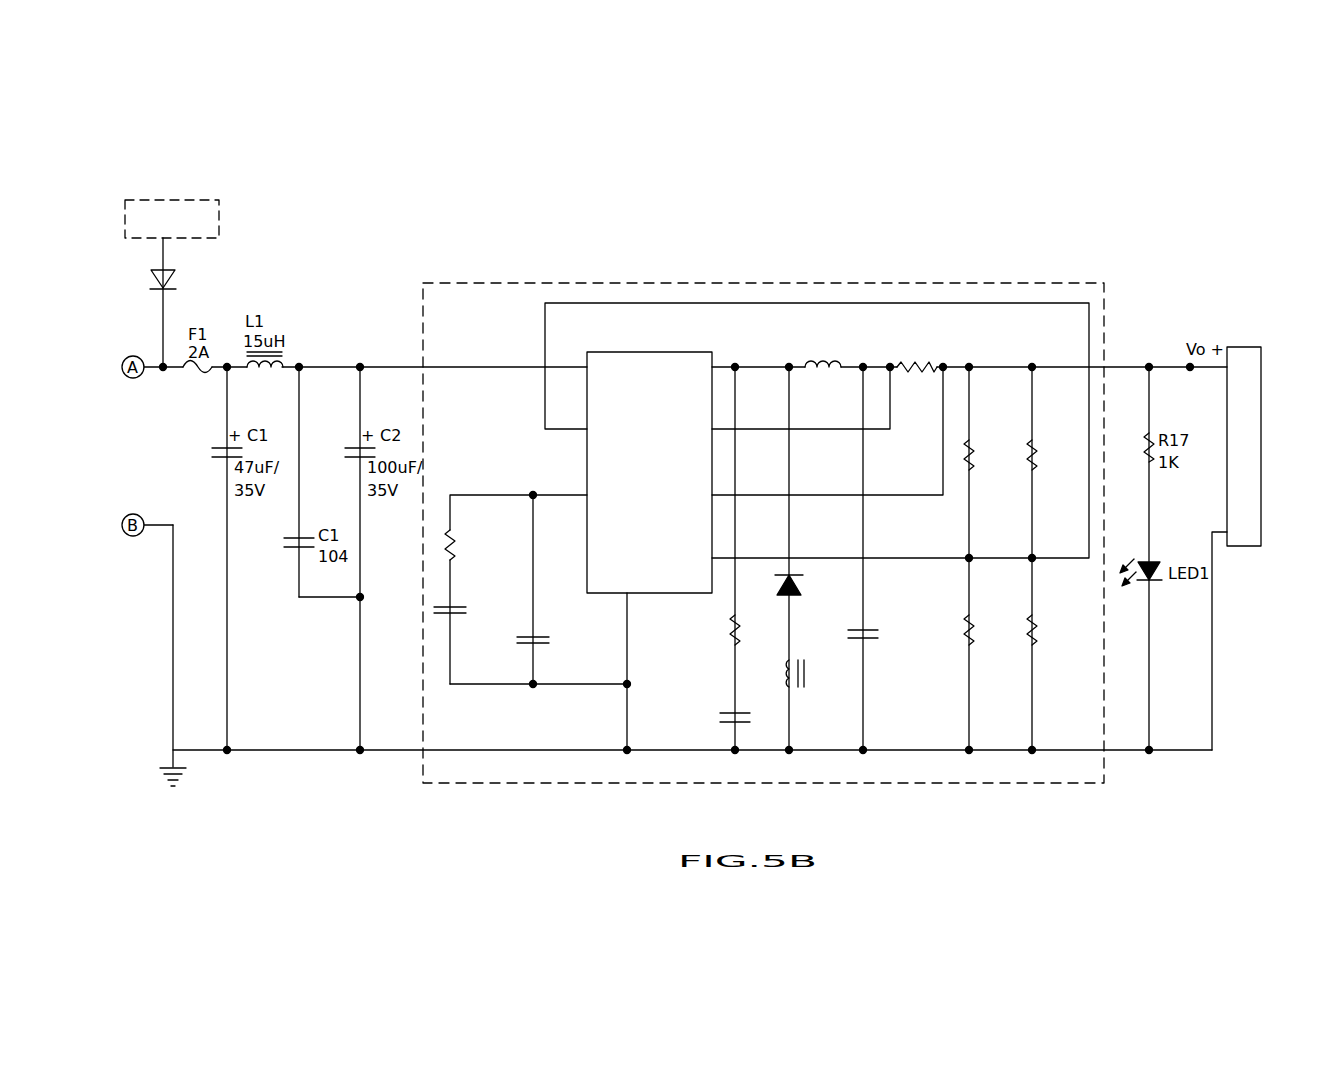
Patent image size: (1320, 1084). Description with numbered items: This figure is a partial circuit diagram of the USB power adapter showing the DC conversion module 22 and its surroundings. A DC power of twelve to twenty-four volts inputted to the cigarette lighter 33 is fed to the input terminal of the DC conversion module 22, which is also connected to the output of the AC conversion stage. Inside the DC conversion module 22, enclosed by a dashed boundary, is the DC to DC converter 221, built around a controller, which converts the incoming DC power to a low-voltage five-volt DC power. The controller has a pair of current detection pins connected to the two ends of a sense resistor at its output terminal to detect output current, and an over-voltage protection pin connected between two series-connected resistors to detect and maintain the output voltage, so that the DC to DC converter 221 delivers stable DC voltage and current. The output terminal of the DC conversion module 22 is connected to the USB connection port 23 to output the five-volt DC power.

The cigarette lighter 33 is at (221, 229).
The DC conversion module 22 is at (988, 236).
The DC to DC converter 221 is at (994, 785).
The USB connection port 23 is at (1254, 548).